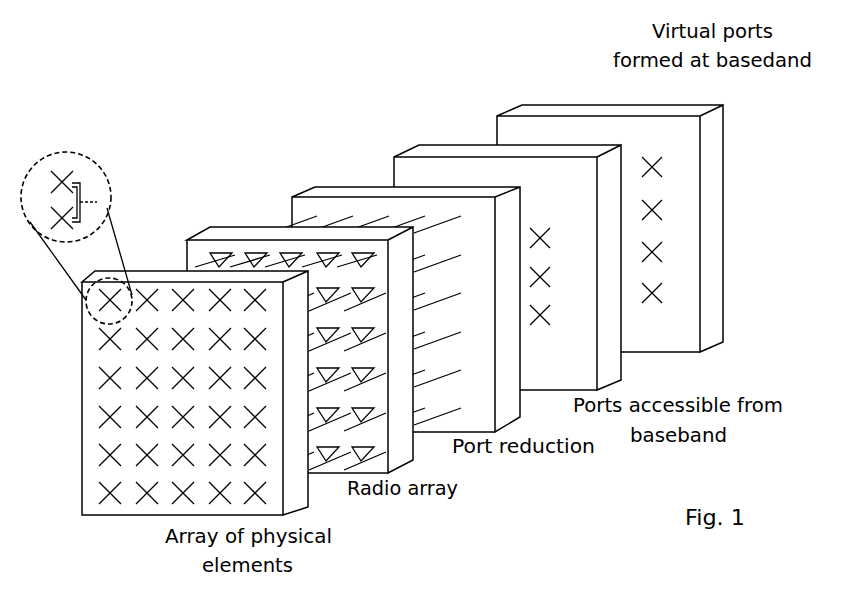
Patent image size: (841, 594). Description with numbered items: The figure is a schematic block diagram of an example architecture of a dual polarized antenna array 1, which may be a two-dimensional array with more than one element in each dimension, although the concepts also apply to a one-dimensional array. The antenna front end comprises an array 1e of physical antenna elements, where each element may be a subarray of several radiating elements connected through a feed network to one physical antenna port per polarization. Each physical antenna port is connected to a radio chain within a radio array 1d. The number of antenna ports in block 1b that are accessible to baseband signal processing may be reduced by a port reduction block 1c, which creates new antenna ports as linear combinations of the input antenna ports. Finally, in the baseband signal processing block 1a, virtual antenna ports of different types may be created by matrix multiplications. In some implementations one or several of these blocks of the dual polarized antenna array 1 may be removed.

The dual polarized antenna array 1 is at (128, 72).
The baseband signal processing block 1a is at (607, 112).
The block of antenna ports accessible to baseband 1b is at (437, 157).
The port reduction block 1c is at (348, 188).
The radio array 1d is at (262, 237).
The array of physical antenna elements 1e is at (182, 272).